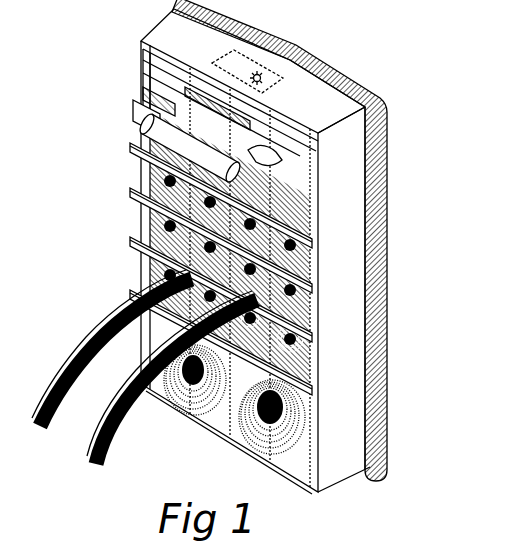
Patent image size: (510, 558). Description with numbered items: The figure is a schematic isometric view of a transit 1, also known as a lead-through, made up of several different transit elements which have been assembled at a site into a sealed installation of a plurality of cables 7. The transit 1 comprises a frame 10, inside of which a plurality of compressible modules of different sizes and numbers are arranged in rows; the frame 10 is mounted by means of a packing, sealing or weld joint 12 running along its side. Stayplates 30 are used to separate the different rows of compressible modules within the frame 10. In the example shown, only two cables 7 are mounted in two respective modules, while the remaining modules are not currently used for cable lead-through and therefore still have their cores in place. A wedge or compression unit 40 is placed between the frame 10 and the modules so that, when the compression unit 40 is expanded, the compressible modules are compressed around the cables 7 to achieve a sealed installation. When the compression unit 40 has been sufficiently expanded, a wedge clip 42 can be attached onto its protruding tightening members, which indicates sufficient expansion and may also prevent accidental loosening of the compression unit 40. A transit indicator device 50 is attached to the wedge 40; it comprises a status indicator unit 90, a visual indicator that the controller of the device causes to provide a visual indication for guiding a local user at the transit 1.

The transit 1 is at (119, 35).
The cables 7 is at (45, 420).
The frame 10 is at (354, 218).
The packing, sealing or weld joint 12 is at (374, 157).
The stayplate 30 is at (316, 278).
The compression unit 40 is at (148, 88).
The wedge clip 42 is at (268, 146).
The transit indicator device 50 is at (238, 62).
The status indicator unit 90 is at (263, 78).